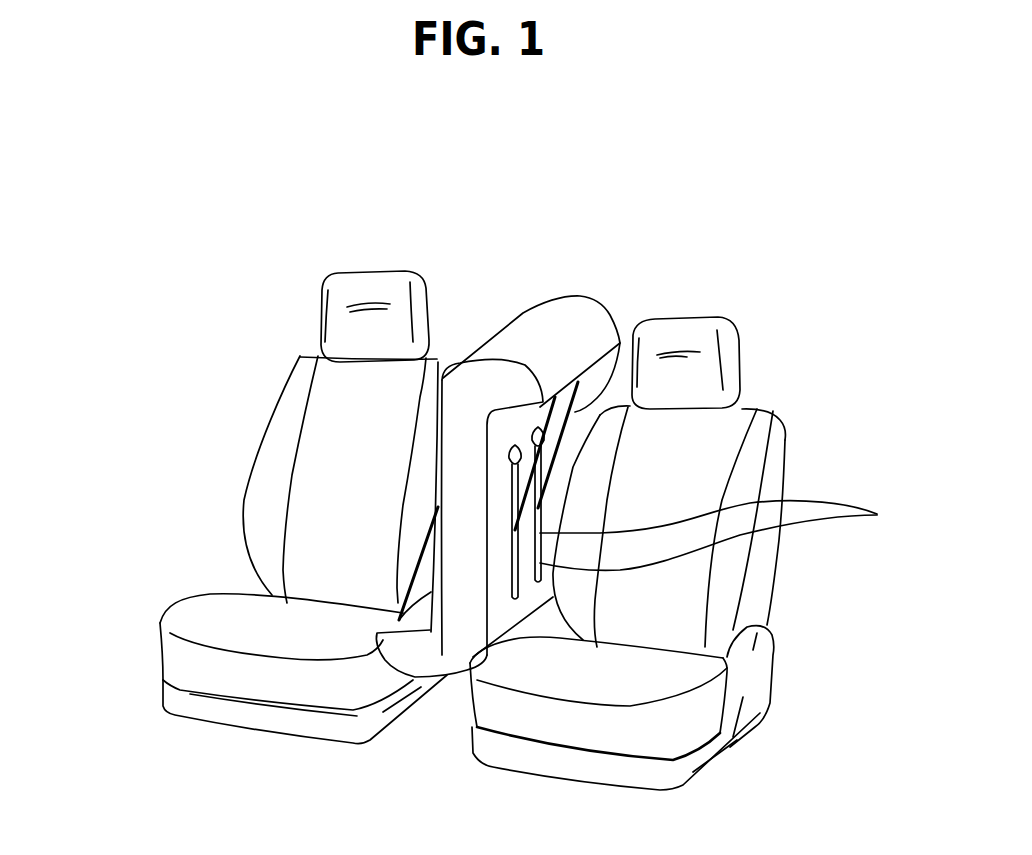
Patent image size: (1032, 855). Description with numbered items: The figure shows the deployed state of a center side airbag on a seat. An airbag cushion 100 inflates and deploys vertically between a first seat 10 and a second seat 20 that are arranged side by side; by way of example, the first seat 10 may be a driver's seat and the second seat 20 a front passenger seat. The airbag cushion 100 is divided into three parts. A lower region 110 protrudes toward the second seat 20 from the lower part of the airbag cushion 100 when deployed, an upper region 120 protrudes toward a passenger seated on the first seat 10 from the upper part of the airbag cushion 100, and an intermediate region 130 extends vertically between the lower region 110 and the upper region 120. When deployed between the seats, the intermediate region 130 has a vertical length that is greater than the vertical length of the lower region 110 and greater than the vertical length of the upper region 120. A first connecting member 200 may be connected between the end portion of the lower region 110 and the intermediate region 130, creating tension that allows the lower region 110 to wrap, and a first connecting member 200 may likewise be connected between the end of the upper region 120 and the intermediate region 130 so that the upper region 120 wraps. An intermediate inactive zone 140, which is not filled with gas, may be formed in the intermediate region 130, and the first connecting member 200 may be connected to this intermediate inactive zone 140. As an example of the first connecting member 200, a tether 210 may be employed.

The first seat 10 is at (784, 590).
The second seat 20 is at (250, 427).
The airbag cushion 100 is at (475, 507).
The lower region 110 is at (422, 647).
The upper region 120 is at (477, 378).
The intermediate region 130 is at (447, 437).
The intermediate inactive zone 140 is at (721, 513).
The first connecting member 200 is at (352, 415).
The tether 210 is at (488, 501).